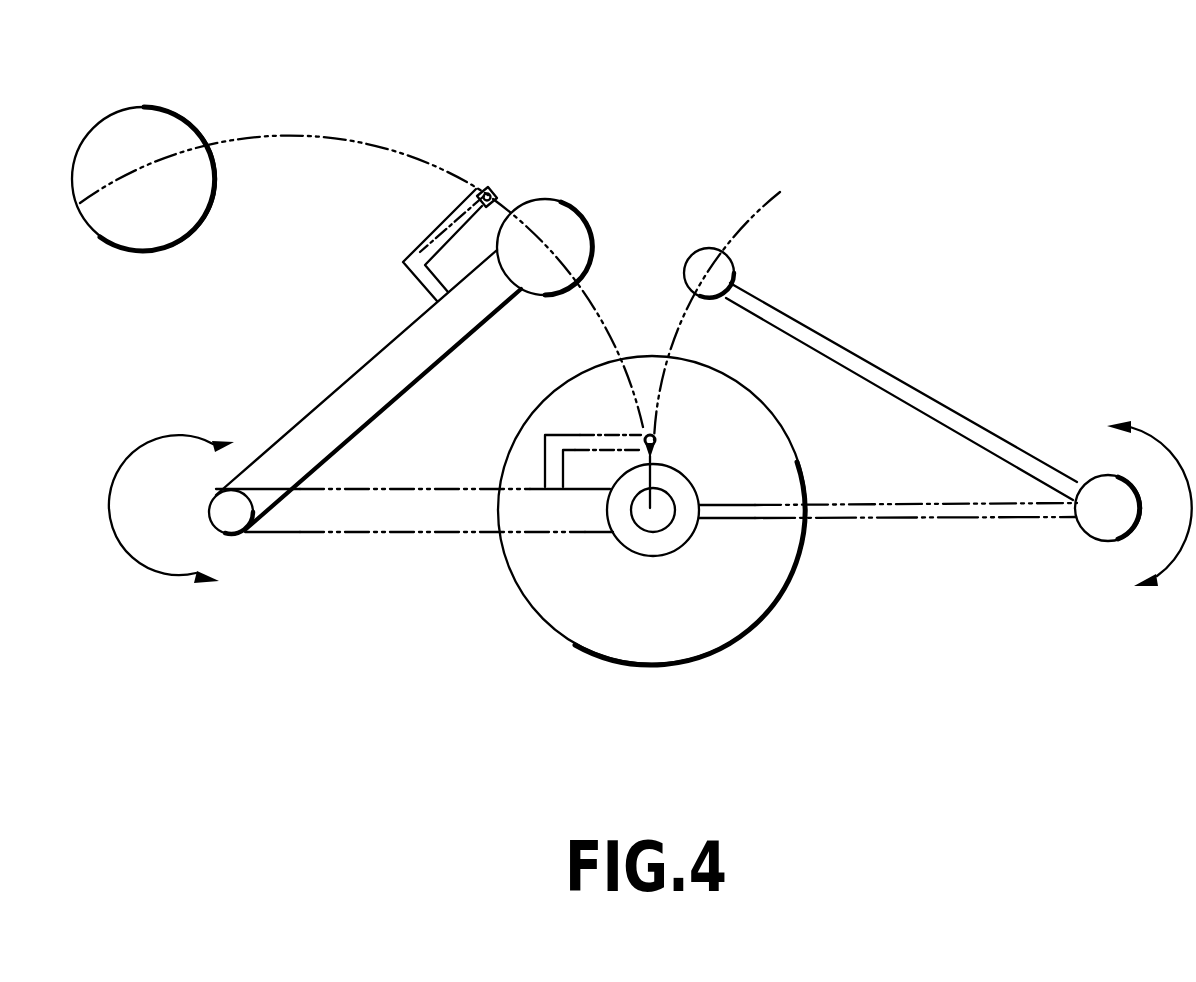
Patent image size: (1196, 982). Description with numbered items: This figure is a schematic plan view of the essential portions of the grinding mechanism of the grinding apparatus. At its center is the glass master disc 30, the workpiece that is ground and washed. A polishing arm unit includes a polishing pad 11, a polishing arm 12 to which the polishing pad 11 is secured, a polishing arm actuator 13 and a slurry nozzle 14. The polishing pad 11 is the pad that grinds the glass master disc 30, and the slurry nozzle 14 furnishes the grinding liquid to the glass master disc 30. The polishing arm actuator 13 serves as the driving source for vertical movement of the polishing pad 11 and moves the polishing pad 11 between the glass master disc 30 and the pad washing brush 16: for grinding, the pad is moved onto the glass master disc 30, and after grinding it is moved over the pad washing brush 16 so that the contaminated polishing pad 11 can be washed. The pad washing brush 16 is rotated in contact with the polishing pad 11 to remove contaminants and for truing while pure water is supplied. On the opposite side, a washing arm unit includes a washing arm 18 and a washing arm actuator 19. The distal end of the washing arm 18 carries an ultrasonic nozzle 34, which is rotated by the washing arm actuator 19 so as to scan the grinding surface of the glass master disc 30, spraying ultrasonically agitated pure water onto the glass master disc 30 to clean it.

The polishing pad 11 is at (555, 218).
The polishing arm 12 is at (325, 415).
The polishing arm actuator 13 is at (230, 523).
The slurry nozzle 14 is at (418, 250).
The pad washing brush 16 is at (160, 128).
The washing arm 18 is at (903, 388).
The washing arm actuator 19 is at (1095, 521).
The glass master disc 30 is at (766, 587).
The ultrasonic nozzle 34 is at (702, 265).